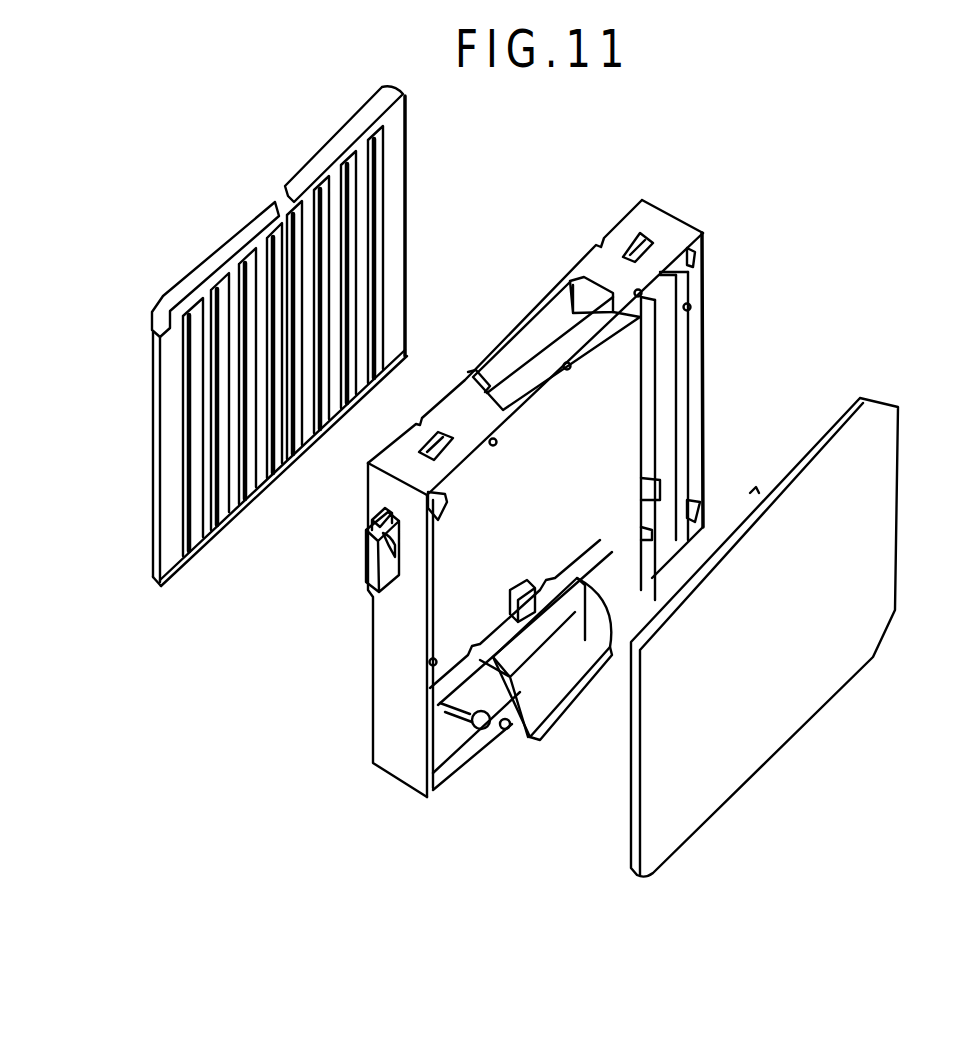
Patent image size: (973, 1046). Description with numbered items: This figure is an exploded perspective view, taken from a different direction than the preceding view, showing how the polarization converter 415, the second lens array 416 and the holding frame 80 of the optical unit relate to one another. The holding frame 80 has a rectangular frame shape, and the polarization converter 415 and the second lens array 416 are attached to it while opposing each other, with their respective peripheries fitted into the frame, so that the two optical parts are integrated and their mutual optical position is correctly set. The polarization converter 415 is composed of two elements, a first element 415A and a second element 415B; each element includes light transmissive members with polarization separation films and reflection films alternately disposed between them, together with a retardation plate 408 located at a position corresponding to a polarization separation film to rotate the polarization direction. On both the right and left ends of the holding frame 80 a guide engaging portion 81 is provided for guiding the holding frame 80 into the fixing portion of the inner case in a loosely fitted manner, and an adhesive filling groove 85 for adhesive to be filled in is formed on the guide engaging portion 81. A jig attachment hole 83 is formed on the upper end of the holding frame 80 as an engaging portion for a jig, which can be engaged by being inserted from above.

The holding frame 80 is at (548, 470).
The guide engaging portion 81 is at (351, 549).
The jig attachment hole 83 is at (531, 298).
The adhesive filling groove 85 is at (349, 529).
The retardation plate 408 is at (322, 341).
The polarization converter 415 is at (277, 211).
The first element 415A is at (321, 144).
The second element 415B is at (215, 248).
The second lens array 416 is at (799, 637).